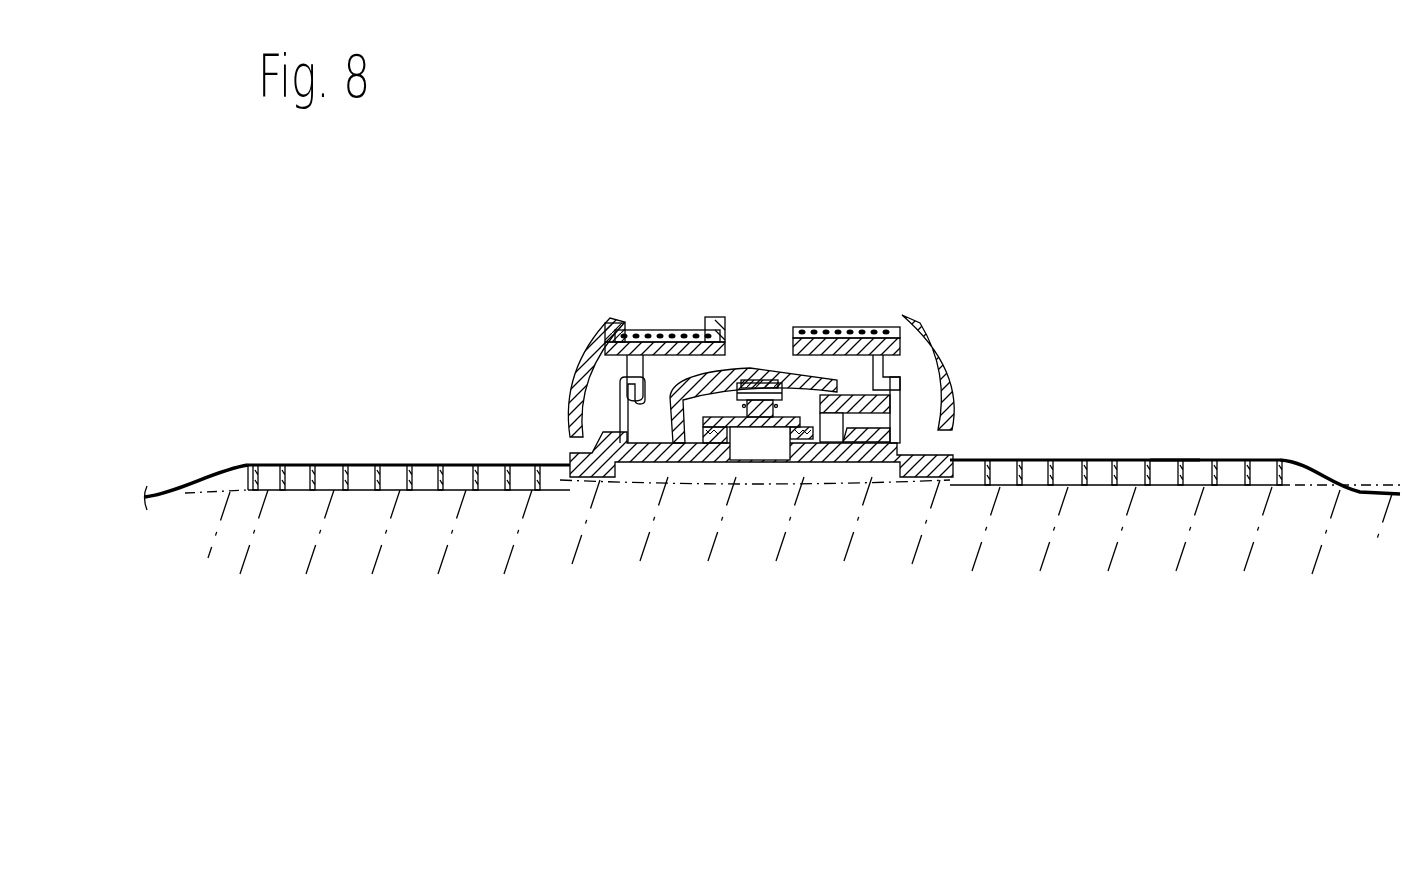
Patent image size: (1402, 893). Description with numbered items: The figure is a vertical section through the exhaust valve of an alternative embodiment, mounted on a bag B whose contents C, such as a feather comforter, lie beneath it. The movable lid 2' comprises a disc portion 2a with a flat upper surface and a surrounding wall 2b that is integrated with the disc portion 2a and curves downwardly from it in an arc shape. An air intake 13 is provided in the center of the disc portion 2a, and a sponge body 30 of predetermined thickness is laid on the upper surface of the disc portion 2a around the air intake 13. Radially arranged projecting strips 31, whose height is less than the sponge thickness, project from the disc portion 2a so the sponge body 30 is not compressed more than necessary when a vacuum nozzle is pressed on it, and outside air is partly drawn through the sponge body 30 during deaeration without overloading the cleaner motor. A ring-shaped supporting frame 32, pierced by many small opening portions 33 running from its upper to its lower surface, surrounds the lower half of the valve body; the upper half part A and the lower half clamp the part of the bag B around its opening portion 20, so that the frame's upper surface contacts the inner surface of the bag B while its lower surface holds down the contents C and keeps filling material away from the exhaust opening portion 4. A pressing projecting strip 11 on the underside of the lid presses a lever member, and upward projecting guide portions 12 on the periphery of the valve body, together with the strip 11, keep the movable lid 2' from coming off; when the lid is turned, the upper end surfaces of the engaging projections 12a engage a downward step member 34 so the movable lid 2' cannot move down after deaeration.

The disc portion 2a is at (667, 322).
The surrounding wall 2b is at (940, 372).
The movable lid 2' is at (768, 279).
The exhaust opening portion 4 is at (746, 443).
The opening portion 20 is at (749, 590).
The pressing projecting strip 11 is at (905, 362).
The projecting guide portion 12 is at (905, 405).
The engaging projection 12a is at (622, 398).
The air intake 13 is at (764, 340).
The sponge body 30 is at (855, 322).
The projecting strip 31 is at (875, 322).
The supporting frame 32 is at (1285, 467).
The small opening portion 33 is at (427, 468).
The downward step member 34 is at (627, 372).
The upper half part A is at (611, 270).
The bag B is at (1163, 460).
The contents C is at (517, 520).